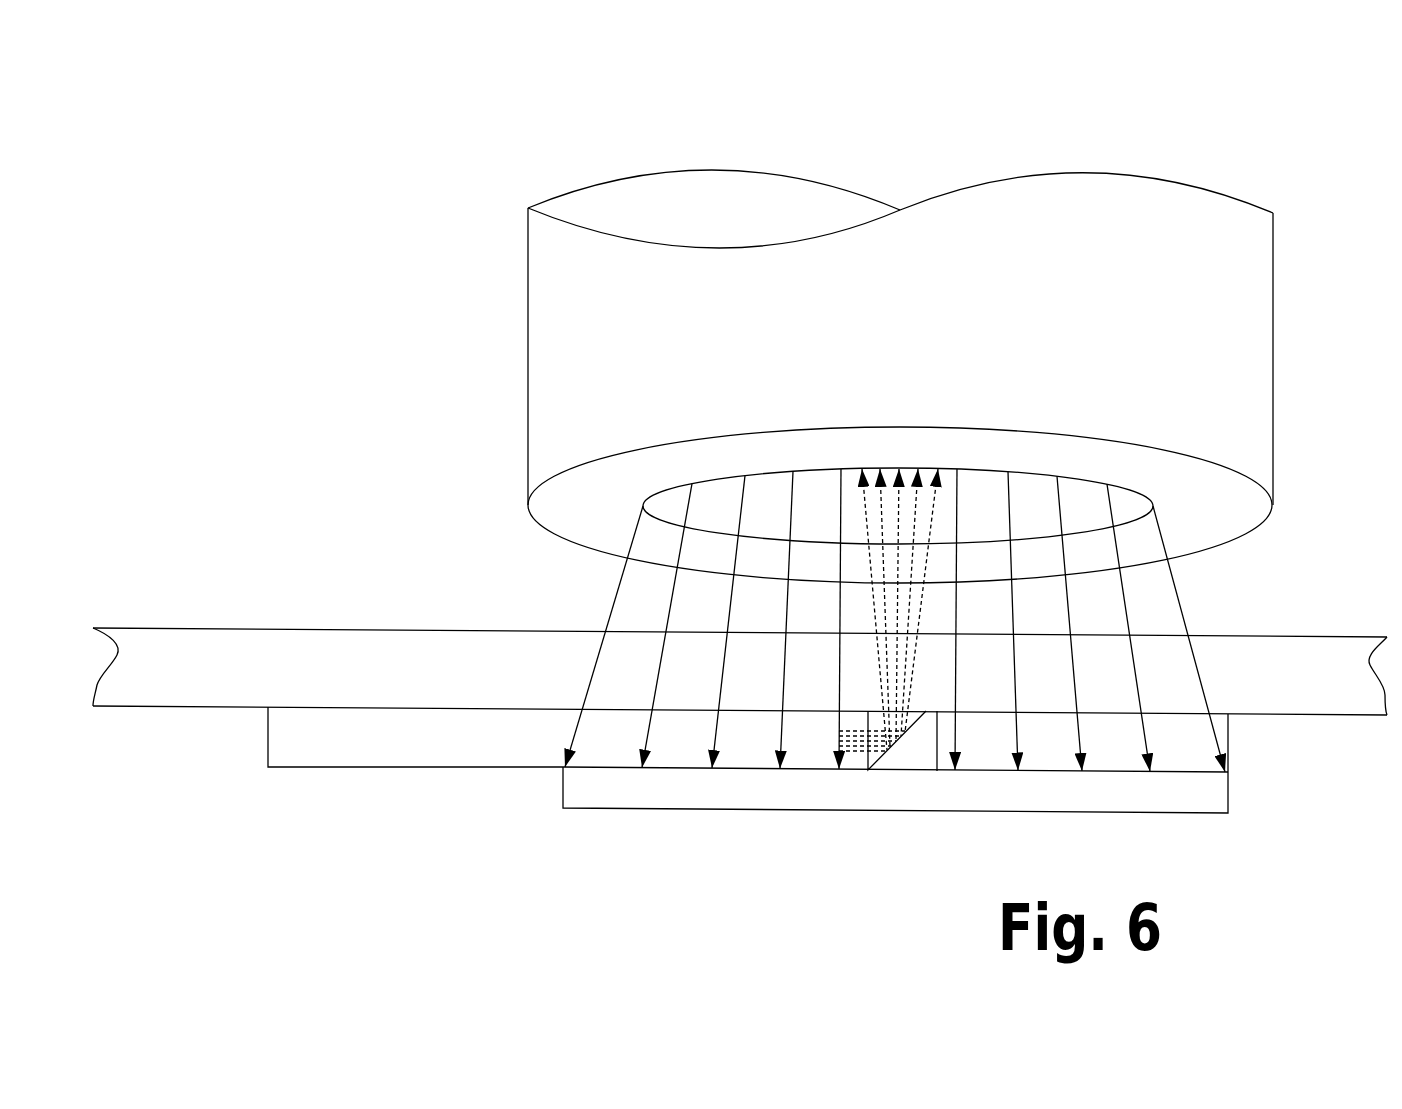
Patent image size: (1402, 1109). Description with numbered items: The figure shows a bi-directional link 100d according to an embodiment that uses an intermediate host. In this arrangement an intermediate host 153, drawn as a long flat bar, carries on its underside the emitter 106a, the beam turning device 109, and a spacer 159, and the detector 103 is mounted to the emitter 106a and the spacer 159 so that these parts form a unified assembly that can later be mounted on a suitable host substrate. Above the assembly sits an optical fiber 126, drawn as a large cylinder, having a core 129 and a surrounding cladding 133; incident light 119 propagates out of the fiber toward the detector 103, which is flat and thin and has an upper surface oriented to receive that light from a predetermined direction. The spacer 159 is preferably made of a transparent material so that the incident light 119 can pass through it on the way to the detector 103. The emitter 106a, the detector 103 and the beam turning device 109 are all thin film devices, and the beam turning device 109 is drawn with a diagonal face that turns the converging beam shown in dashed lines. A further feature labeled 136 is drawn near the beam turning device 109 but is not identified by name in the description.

The bi-directional link 100d is at (373, 483).
The optical fiber 126 is at (1275, 353).
The cladding 133 is at (572, 512).
The core 129 is at (707, 505).
The incident light 119 is at (1182, 605).
The spacer 159 is at (1198, 757).
The reflected light beam 136 is at (858, 753).
The beam turning device 109 is at (897, 748).
The intermediate host 153 is at (210, 648).
The emitter 106a is at (407, 728).
The thin film detector 103 is at (1072, 793).